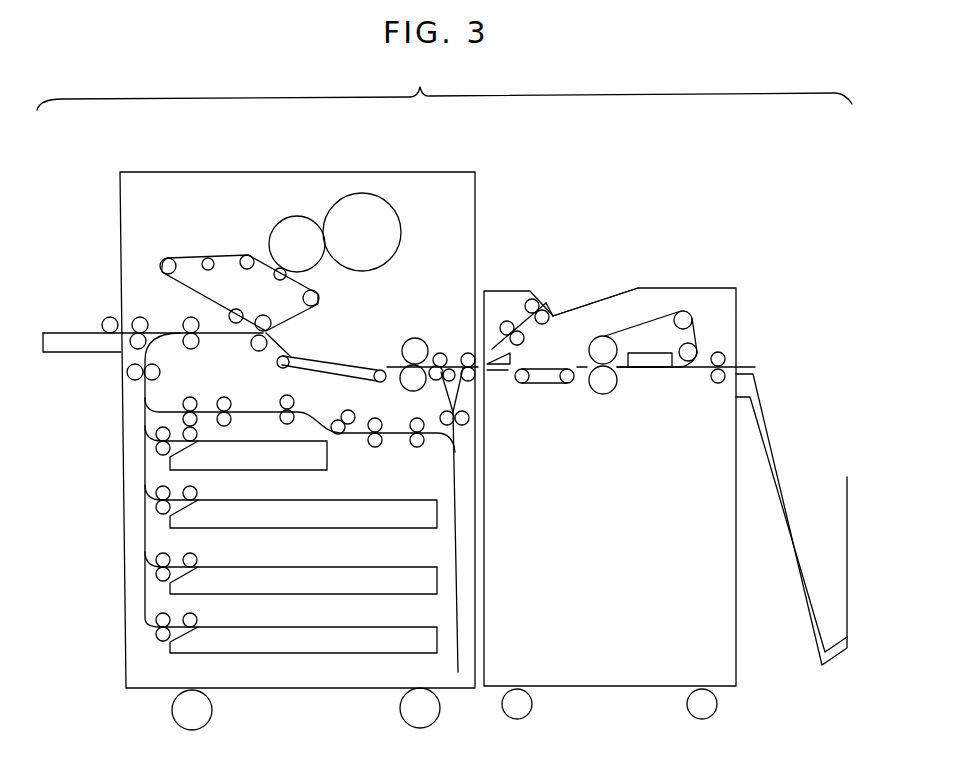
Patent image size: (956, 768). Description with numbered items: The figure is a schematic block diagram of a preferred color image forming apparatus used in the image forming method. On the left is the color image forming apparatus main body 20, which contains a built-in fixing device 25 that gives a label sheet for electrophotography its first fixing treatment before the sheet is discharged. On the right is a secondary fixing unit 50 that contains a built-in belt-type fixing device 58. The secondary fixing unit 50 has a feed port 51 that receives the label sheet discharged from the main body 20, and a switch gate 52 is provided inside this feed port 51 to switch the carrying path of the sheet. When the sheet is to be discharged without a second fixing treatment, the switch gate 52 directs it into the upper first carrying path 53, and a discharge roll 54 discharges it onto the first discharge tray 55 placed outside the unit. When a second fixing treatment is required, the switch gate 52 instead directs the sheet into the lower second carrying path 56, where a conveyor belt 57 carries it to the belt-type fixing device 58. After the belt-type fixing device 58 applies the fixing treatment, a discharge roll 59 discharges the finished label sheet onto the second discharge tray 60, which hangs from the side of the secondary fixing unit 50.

The color image forming apparatus main body 20 is at (414, 155).
The fixing device 25 is at (413, 331).
The secondary fixing unit 50 is at (641, 214).
The feed port 51 is at (491, 347).
The switch gate 52 is at (519, 358).
The first carrying path 53 is at (518, 323).
The discharge roll 54 is at (547, 302).
The first discharge tray 55 is at (605, 302).
The second carrying path 56 is at (498, 373).
The conveyor belt 57 is at (556, 385).
The belt-type fixing device 58 is at (654, 315).
The discharge roll 59 is at (722, 348).
The second discharge tray 60 is at (768, 423).